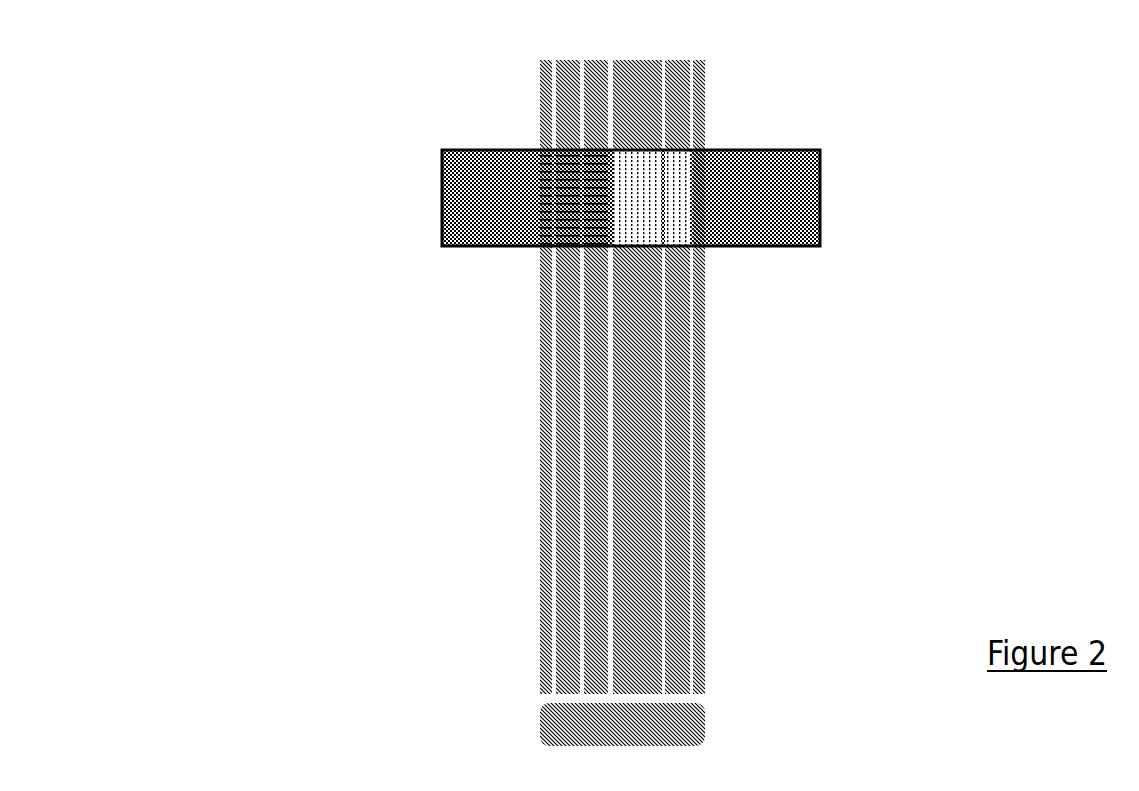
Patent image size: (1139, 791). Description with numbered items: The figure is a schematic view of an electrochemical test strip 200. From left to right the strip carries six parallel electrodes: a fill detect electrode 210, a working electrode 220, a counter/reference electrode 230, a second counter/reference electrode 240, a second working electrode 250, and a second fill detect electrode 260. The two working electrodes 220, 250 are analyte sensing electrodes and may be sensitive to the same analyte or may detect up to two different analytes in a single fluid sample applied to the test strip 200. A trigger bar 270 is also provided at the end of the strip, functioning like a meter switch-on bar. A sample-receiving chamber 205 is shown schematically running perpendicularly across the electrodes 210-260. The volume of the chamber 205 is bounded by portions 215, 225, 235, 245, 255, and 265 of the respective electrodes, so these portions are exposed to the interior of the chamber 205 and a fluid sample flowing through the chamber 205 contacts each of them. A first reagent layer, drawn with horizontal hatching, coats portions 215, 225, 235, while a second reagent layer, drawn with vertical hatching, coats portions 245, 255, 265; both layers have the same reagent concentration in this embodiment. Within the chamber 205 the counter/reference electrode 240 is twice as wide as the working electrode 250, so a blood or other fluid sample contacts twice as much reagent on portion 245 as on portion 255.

The test strip 200 is at (624, 401).
The sample-receiving chamber 205 is at (670, 172).
The fill detect electrode 210 is at (549, 343).
The portion of fill detect electrode 215 is at (548, 173).
The working electrode 220 is at (570, 381).
The portion of working electrode 225 is at (568, 210).
The counter/reference electrode 230 is at (595, 437).
The portion of counter/reference electrode 235 is at (598, 223).
The counter/reference electrode 240 is at (635, 395).
The portion of counter/reference electrode 245 is at (637, 174).
The working electrode 250 is at (677, 335).
The portion of working electrode 255 is at (677, 176).
The fill detect electrode 260 is at (699, 304).
The portion of fill detect electrode 265 is at (703, 218).
The trigger bar 270 is at (637, 719).